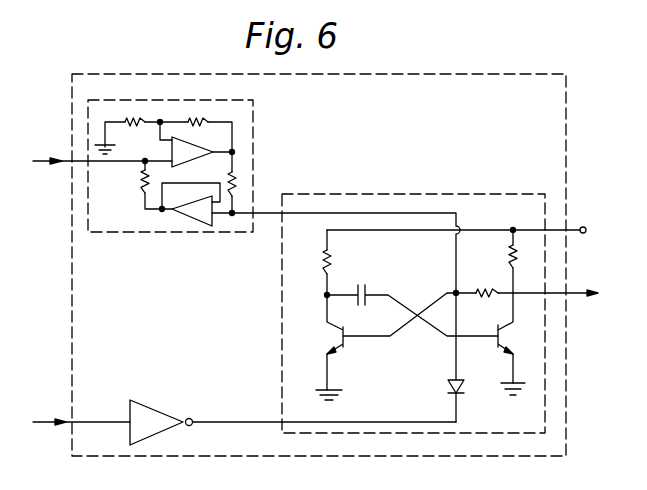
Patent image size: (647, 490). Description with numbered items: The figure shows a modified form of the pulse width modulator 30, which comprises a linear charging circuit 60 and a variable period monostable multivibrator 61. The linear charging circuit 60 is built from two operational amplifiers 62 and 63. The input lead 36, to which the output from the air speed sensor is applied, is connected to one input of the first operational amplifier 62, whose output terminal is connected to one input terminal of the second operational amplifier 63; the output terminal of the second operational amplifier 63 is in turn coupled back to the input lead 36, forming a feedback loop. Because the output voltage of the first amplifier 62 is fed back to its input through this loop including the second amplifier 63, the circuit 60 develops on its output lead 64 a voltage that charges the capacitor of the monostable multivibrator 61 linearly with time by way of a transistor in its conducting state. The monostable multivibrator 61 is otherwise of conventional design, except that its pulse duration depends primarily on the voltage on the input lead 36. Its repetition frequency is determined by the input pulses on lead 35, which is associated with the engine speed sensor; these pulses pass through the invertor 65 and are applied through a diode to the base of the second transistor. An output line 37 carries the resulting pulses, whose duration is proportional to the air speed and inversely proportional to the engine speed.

The pulse width modulator 30 is at (447, 110).
The lead 35 is at (53, 421).
The input lead 36 is at (42, 160).
The output line 37 is at (577, 297).
The linear charging circuit 60 is at (253, 162).
The variable period monostable multivibrator 61 is at (281, 318).
The first operational amplifier 62 is at (166, 148).
The second operational amplifier 63 is at (162, 219).
The output lead 64 is at (260, 232).
The invertor 65 is at (171, 410).